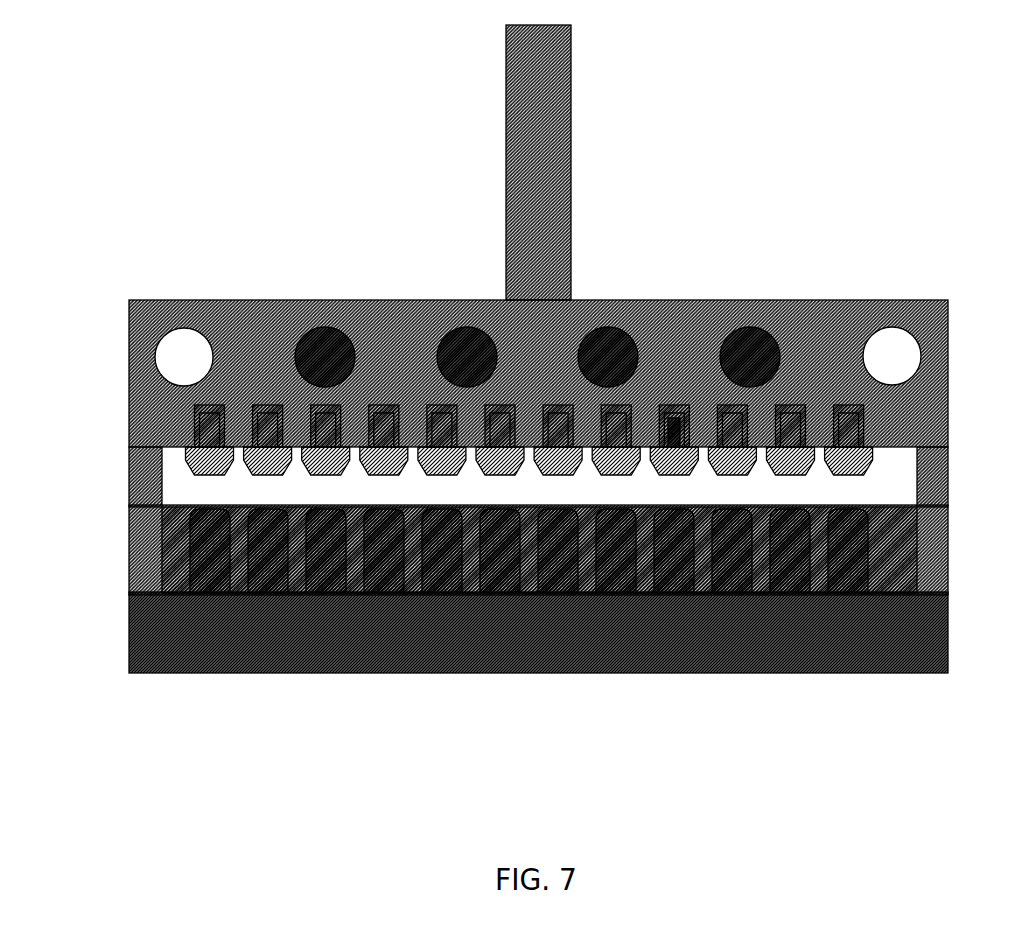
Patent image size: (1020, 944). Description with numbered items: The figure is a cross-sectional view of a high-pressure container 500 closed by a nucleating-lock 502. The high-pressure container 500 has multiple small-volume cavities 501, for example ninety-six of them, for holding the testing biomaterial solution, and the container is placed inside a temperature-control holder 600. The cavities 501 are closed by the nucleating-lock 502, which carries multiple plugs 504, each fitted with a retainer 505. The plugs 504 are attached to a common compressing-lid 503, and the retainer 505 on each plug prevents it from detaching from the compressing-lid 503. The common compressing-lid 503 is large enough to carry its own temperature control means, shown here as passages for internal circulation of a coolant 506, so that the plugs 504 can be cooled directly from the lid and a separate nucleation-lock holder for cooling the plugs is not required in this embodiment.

The high-pressure container 500 is at (498, 399).
The cavities 501 is at (488, 673).
The nucleating-lock 502 is at (128, 397).
The common compressing-lid 503 is at (238, 405).
The plugs 504 is at (680, 425).
The retainer 505 is at (797, 420).
The coolant 506 is at (317, 360).
The temperature-control holder 600 is at (309, 673).